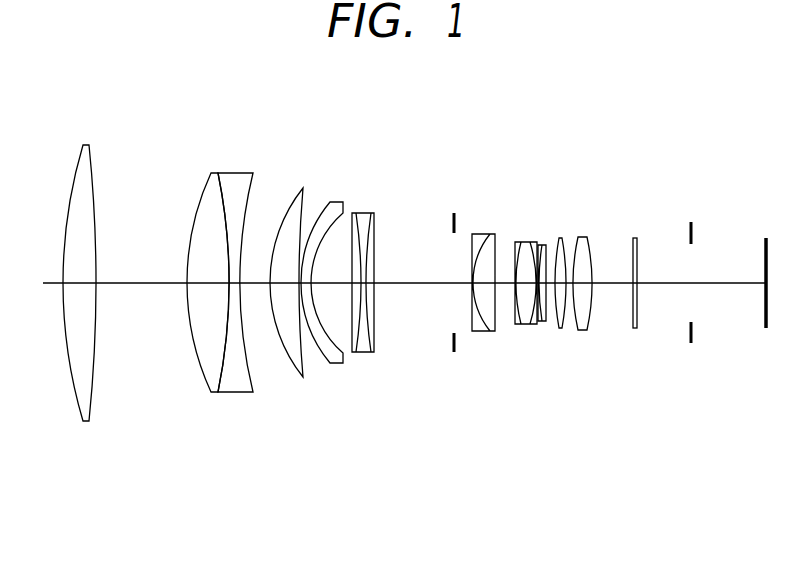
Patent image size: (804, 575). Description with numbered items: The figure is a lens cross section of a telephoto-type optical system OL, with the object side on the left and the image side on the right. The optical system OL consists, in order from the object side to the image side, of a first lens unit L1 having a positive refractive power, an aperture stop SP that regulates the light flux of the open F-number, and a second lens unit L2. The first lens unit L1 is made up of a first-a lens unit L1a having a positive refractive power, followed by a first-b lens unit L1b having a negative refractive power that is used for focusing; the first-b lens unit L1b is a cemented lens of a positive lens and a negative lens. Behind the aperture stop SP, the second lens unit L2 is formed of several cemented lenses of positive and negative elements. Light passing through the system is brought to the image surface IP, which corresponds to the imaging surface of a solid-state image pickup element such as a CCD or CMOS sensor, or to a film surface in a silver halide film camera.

The optical system OL is at (607, 129).
The first lens unit L1 is at (405, 482).
The first-a lens unit L1a is at (343, 423).
The first-b lens unit L1b is at (392, 423).
The aperture stop SP is at (470, 194).
The second lens unit L2 is at (599, 482).
The image surface IP is at (766, 310).